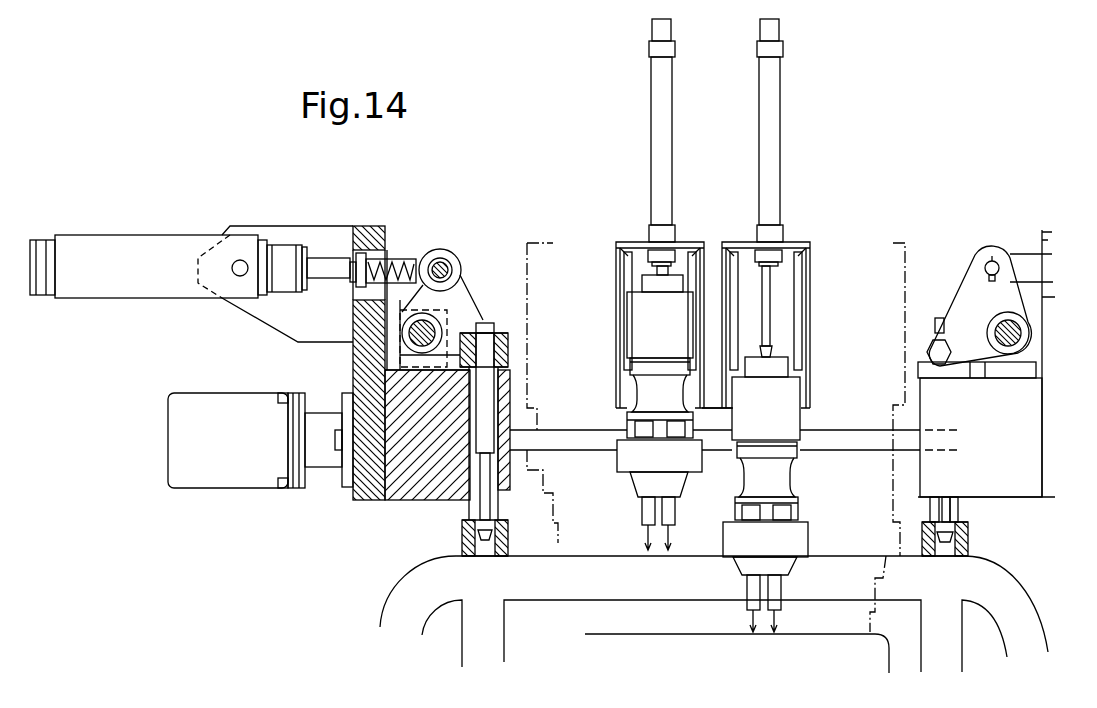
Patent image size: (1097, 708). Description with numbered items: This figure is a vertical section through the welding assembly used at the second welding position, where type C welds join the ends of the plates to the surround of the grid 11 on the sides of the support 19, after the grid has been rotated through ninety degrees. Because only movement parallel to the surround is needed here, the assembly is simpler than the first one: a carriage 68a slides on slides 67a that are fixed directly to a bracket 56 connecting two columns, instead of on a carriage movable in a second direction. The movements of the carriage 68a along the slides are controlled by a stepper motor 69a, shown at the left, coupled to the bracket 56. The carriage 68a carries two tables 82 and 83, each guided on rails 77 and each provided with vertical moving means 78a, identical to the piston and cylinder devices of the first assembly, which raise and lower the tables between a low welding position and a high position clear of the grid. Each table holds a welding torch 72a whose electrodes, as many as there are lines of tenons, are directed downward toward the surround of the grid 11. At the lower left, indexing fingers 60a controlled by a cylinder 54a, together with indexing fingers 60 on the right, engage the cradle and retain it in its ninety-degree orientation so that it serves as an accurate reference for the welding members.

The grid 11 is at (643, 624).
The support 19 is at (1040, 582).
The cylinder 54a is at (175, 252).
The bracket 56 is at (373, 468).
The indexing fingers 60 is at (950, 508).
The indexing fingers 60a is at (475, 502).
The slides 67a is at (577, 438).
The carriage 68a is at (712, 425).
The stepper motor 69a is at (230, 472).
The welding torch 72a is at (648, 482).
The rails 77 is at (620, 278).
The vertical moving means 78a is at (768, 127).
The table 82 is at (777, 423).
The table 83 is at (642, 325).